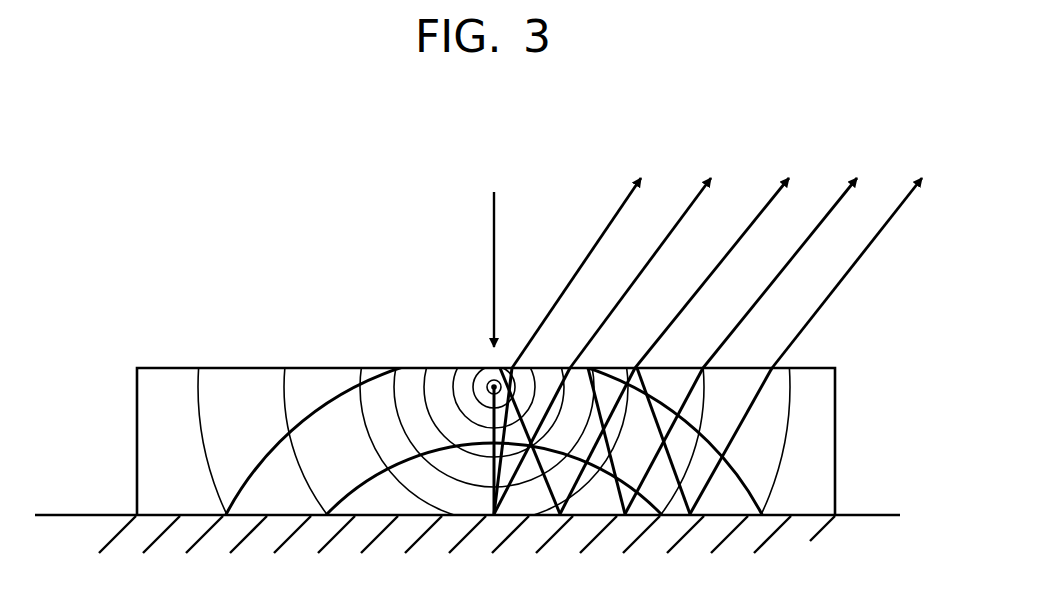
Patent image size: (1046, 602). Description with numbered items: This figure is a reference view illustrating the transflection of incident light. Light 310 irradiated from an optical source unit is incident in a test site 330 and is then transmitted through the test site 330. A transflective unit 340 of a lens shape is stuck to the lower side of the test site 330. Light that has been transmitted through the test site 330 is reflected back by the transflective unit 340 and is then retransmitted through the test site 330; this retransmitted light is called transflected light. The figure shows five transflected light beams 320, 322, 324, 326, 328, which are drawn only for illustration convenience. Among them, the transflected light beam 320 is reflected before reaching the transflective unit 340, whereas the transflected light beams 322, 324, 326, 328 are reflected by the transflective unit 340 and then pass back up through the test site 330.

The light 310 is at (493, 272).
The transflected light beam 320 is at (579, 324).
The transflected light beam 322 is at (615, 324).
The transflected light beam 324 is at (685, 324).
The transflected light beam 326 is at (754, 324).
The transflected light beam 328 is at (823, 324).
The test site 330 is at (820, 445).
The transflective unit 340 is at (820, 543).